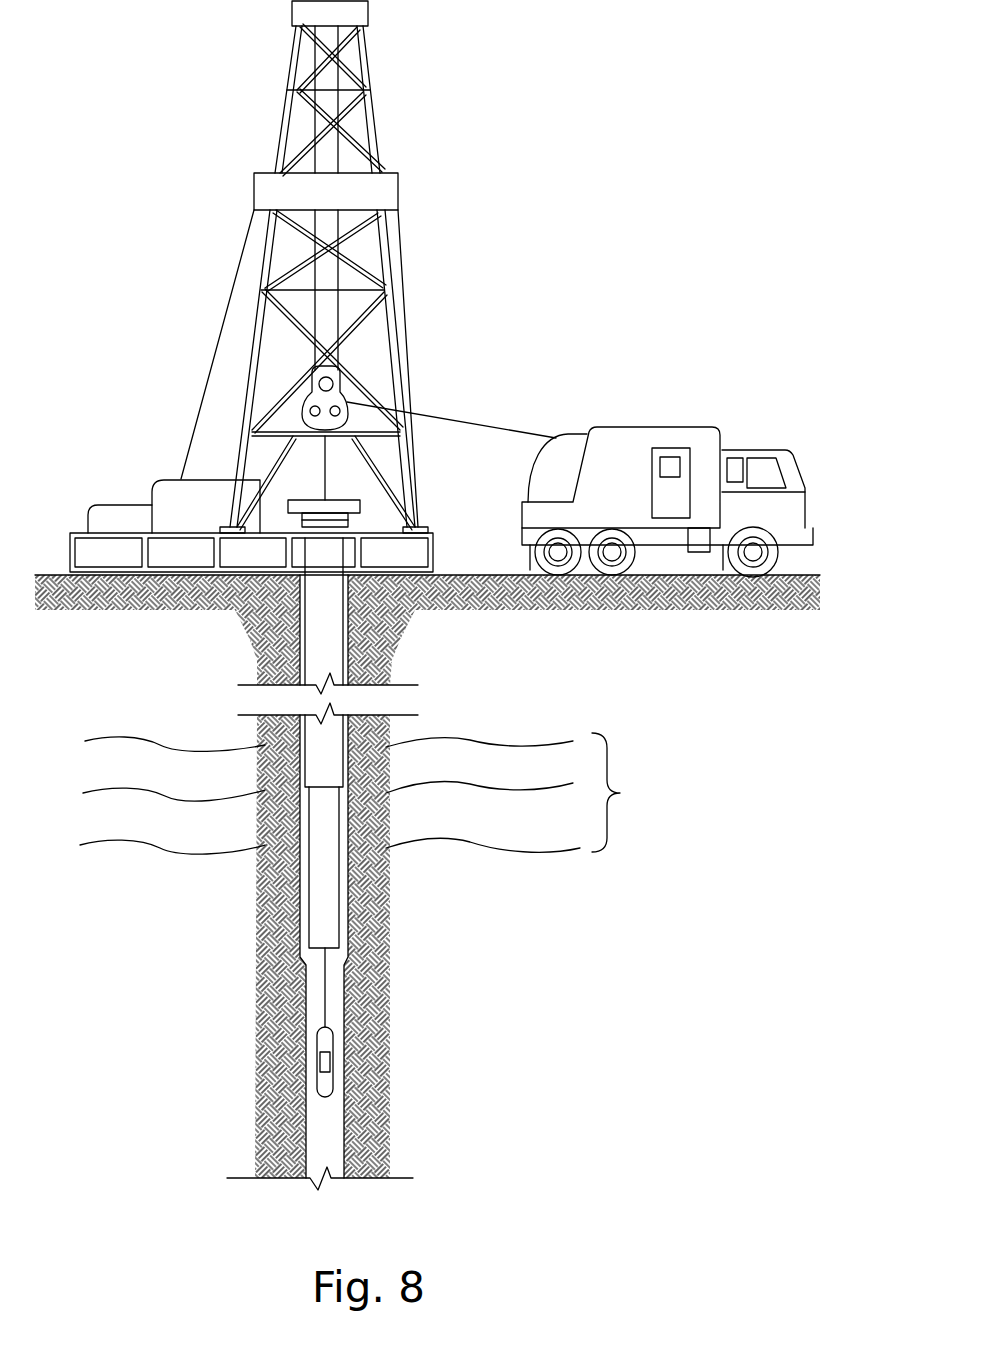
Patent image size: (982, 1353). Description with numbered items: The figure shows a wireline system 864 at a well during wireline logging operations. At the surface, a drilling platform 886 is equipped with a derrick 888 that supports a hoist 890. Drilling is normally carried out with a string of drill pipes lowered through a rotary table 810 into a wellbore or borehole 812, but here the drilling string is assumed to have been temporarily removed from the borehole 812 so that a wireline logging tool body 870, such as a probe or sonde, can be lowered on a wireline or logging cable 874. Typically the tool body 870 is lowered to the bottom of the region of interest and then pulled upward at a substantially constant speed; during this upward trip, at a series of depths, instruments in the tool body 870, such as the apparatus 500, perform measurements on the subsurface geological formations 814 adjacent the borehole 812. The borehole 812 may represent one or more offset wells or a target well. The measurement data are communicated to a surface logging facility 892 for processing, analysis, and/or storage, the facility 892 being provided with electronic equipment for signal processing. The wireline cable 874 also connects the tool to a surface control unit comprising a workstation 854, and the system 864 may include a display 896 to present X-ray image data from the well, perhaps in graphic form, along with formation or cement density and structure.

The wireline system 864 is at (603, 201).
The hoist 890 is at (337, 387).
The wireline or logging cable 874 is at (452, 419).
The surface logging facility 892 is at (667, 468).
The display 896 is at (670, 457).
The workstation 854 is at (650, 496).
The rotary table 810 is at (360, 498).
The derrick 888 is at (415, 526).
The drilling platform 886 is at (434, 556).
The subsurface geological formations 814 is at (376, 793).
The wellbore or borehole 812 is at (306, 984).
The wireline logging tool body 870 is at (328, 1035).
The apparatus 500 is at (337, 1062).